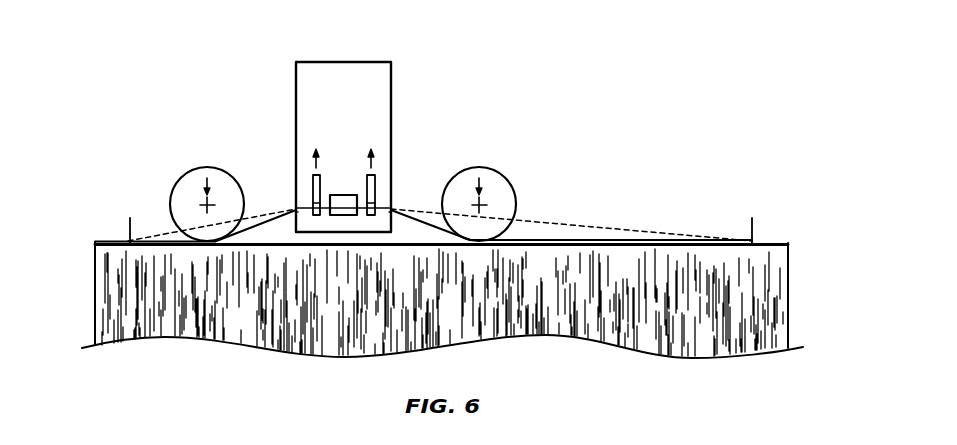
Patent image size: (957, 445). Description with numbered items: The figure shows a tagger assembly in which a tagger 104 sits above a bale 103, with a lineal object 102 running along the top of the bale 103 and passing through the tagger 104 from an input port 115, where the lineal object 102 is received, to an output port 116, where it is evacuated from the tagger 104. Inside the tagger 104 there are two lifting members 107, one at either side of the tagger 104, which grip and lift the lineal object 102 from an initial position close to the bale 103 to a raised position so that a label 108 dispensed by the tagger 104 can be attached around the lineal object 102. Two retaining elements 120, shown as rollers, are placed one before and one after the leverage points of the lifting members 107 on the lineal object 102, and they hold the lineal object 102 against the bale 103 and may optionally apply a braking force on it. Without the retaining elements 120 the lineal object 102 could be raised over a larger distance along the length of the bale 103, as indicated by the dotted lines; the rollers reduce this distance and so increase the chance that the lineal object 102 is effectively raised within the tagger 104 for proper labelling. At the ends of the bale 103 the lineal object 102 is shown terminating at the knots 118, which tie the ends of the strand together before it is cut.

The lineal object 102 is at (699, 245).
The bale 103 is at (571, 262).
The tagger 104 is at (360, 62).
The lifting member 107 is at (311, 187).
The label 108 is at (340, 195).
The input port 115 is at (296, 210).
The output port 116 is at (391, 210).
The knot 118 is at (128, 241).
The retaining element 120 is at (184, 173).